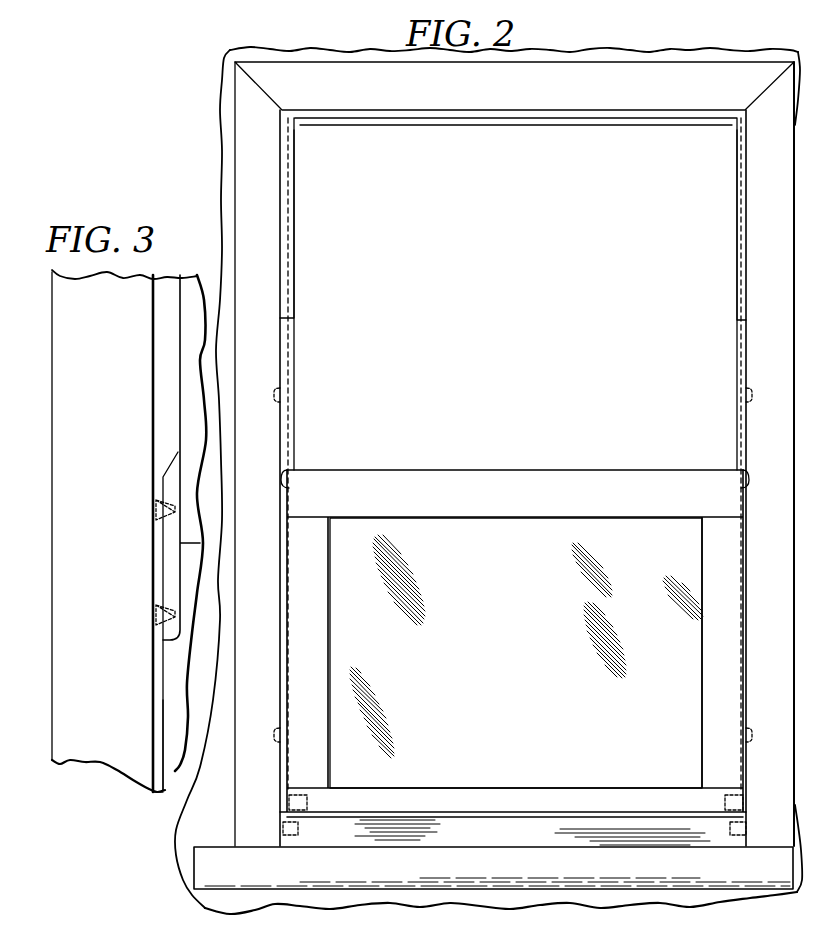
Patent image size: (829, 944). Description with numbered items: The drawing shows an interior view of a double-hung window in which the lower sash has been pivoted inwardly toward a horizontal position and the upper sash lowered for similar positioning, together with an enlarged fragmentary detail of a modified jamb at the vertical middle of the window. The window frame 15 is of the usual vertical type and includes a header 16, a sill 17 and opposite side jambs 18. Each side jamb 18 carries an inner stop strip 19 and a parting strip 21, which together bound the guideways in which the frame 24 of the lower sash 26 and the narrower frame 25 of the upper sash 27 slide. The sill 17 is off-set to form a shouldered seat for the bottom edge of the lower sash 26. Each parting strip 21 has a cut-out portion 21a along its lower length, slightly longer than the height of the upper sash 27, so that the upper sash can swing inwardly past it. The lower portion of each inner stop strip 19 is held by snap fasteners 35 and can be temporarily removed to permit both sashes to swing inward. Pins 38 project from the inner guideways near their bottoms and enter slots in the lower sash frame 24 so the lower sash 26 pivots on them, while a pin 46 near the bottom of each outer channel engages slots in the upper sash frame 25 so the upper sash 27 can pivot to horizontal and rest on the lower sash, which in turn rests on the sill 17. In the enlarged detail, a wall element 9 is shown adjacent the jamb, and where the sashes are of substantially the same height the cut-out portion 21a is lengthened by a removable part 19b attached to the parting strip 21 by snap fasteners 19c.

In FIG. 3, the wall 9 is at (152, 367).
In FIG. 2, the window frame 15 is at (229, 146).
In FIG. 3, the window frame 15 is at (44, 489).
In FIG. 2, the header 16 is at (743, 70).
In FIG. 2, the sill 17 is at (212, 868).
In FIG. 2, the side jamb 18 is at (248, 180).
In FIG. 3, the side jamb 18 is at (65, 430).
In FIG. 2, the inner stop strip 19 is at (296, 175).
In FIG. 3, the removable part 19b is at (172, 563).
In FIG. 3, the snap fasteners 19c is at (160, 508).
In FIG. 2, the parting strip 21 is at (296, 271).
In FIG. 2, the cut-out portion 21a is at (286, 482).
In FIG. 2, the frame of lower sash 24 is at (367, 836).
In FIG. 3, the frame of lower sash 24 is at (180, 775).
In FIG. 2, the frame of upper sash 25 is at (656, 484).
In FIG. 3, the frame of upper sash 25 is at (195, 289).
In FIG. 2, the lower sash 26 is at (472, 838).
In FIG. 2, the upper sash 27 is at (586, 465).
In FIG. 2, the snap fasteners 35 is at (274, 396).
In FIG. 2, the pins 38 is at (284, 826).
In FIG. 2, the pin 46 is at (300, 793).